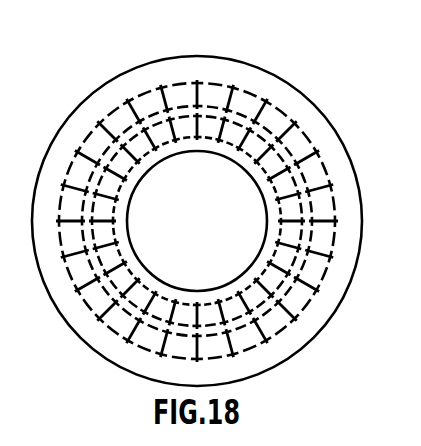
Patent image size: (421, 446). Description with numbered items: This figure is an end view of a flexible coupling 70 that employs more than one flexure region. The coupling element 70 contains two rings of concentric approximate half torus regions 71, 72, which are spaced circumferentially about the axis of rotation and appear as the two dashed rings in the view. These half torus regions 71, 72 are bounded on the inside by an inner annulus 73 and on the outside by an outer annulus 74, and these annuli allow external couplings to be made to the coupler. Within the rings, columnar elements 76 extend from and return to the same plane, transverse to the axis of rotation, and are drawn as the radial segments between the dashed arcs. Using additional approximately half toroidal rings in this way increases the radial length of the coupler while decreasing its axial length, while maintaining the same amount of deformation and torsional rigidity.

The flexible coupling 70 is at (214, 212).
The approximate half torus region 71 is at (302, 147).
The approximate half torus region 72 is at (260, 302).
The inner annulus 73 is at (228, 290).
The outer annulus 74 is at (228, 68).
The columnar element 76 is at (328, 210).